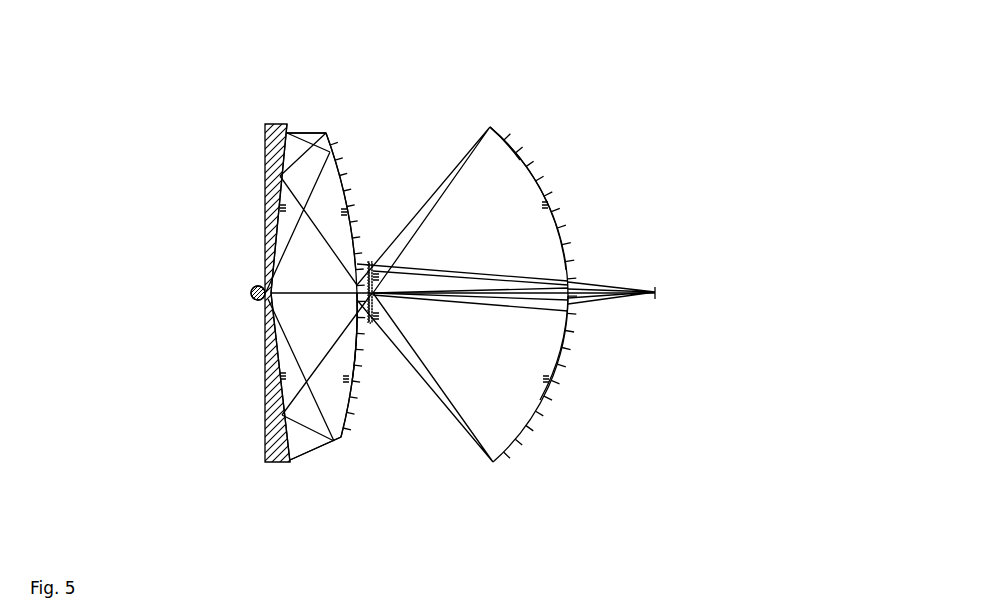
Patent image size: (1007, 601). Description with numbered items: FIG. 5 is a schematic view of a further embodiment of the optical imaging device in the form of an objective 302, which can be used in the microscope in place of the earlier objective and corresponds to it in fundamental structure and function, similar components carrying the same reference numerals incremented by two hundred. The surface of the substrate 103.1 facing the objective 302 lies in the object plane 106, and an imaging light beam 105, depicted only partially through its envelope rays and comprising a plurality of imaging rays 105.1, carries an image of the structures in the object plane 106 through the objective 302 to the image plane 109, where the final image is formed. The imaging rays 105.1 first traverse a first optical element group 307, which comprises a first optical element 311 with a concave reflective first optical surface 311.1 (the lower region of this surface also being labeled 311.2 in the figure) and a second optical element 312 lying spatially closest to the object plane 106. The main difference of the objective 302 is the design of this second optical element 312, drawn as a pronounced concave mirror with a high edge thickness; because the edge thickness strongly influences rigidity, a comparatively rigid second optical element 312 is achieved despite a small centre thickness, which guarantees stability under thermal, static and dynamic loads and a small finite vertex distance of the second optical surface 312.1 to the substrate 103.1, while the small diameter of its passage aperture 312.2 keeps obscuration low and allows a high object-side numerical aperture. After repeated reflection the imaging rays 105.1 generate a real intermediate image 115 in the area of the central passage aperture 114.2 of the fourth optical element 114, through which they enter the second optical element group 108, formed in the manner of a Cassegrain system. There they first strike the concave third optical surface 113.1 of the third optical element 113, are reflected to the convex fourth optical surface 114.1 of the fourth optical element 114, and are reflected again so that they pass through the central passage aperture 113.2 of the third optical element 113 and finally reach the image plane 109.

The objective 302 is at (601, 66).
The first optical element group 307 is at (297, 108).
The second optical element 312 is at (277, 464).
The second optical surface 312.1 is at (288, 142).
The passage aperture 312.2 is at (262, 300).
The imaging light beam 105 is at (397, 210).
The imaging rays 105.1 is at (310, 460).
The first optical element 311 is at (333, 455).
The first optical surface 311.1 is at (350, 226).
The lower lens surface 311.2 is at (353, 300).
The intermediate image 115 is at (370, 288).
The fourth optical element 114 is at (368, 330).
The fourth optical surface 114.1 is at (378, 270).
The passage aperture 114.2 is at (379, 298).
The object plane 106 is at (251, 284).
The substrate 103.1 is at (250, 293).
The third optical element 113 is at (513, 447).
The third optical surface 113.1 is at (519, 162).
The passage aperture 113.2 is at (573, 297).
The second optical element group 108 is at (482, 113).
The image plane 109 is at (660, 295).